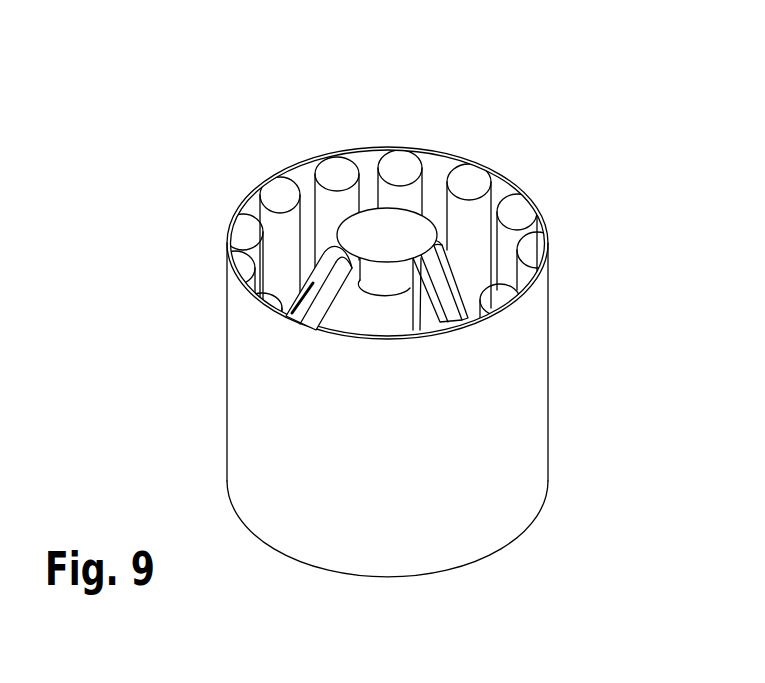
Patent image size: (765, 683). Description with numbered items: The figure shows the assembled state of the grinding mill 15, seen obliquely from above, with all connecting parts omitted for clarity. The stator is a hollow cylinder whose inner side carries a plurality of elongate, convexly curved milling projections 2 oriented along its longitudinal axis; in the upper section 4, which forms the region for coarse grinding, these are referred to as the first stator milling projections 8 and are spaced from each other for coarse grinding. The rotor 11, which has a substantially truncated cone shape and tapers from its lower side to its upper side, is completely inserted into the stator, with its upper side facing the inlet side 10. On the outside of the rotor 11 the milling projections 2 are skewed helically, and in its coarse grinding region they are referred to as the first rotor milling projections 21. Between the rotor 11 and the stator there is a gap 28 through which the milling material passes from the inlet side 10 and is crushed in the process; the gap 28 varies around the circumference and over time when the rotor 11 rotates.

The milling projections 2 is at (472, 215).
The upper section 4 is at (376, 215).
The first stator milling projections 8 is at (281, 228).
The inlet side 10 is at (491, 232).
The rotor 11 is at (393, 232).
The grinding mill 15 is at (447, 540).
The first rotor milling projections 21 is at (322, 302).
The gap 28 is at (479, 274).